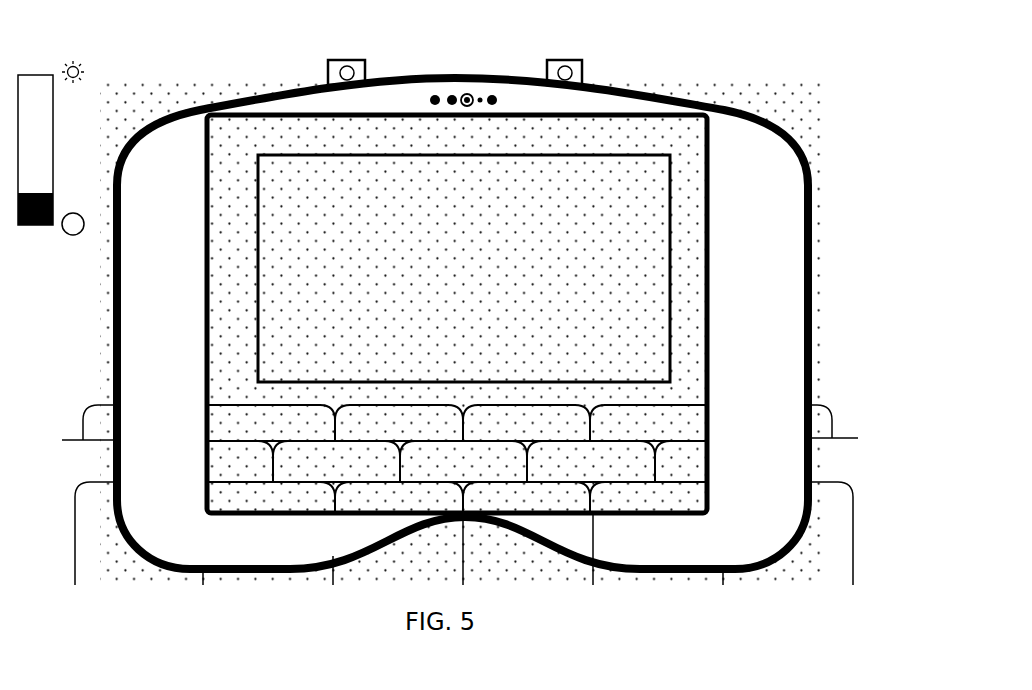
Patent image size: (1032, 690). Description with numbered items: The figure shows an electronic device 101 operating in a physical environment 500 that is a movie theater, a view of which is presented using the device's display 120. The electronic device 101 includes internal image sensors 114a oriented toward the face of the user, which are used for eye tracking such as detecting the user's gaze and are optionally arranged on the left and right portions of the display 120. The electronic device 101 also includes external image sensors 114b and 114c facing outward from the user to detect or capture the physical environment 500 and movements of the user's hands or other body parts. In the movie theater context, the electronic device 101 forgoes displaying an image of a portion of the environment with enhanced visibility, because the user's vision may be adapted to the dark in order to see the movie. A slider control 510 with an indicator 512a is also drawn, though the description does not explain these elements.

The electronic device 101 is at (668, 98).
The internal image sensors 114a is at (505, 98).
The external image sensor 114b is at (367, 71).
The external image sensor 114c is at (583, 72).
The display 120 is at (692, 520).
The physical environment 500 is at (484, 143).
The brightness slider 510 is at (26, 227).
The slider fill indicator 512a is at (38, 193).